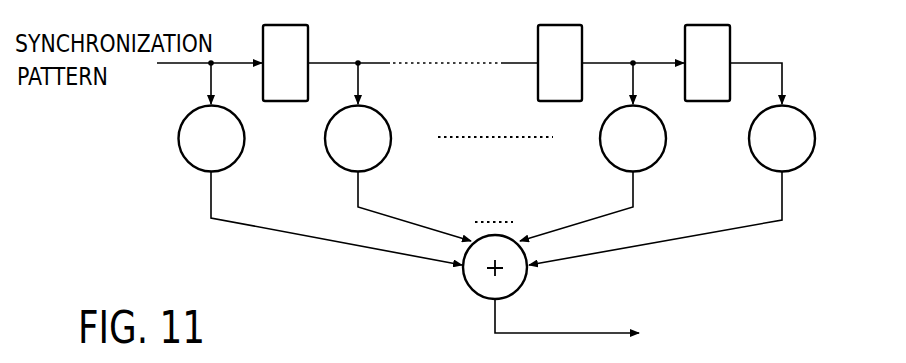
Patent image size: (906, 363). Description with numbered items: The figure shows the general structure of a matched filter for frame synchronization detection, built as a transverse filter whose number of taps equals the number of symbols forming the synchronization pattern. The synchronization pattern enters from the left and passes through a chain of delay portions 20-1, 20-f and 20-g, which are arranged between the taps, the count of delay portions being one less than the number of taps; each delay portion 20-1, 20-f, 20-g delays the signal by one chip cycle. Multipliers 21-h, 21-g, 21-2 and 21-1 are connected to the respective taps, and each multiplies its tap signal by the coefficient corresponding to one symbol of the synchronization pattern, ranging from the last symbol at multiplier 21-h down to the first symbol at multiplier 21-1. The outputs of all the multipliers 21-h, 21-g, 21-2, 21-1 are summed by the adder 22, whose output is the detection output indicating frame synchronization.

The delay portion 20-1 is at (293, 101).
The delay portion 20-f is at (538, 92).
The delay portion 20-g is at (710, 101).
The multiplier 21-h is at (186, 163).
The multiplier 21-g is at (334, 163).
The multiplier 21-2 is at (609, 163).
The multiplier 21-1 is at (758, 163).
The adder 22 is at (474, 291).